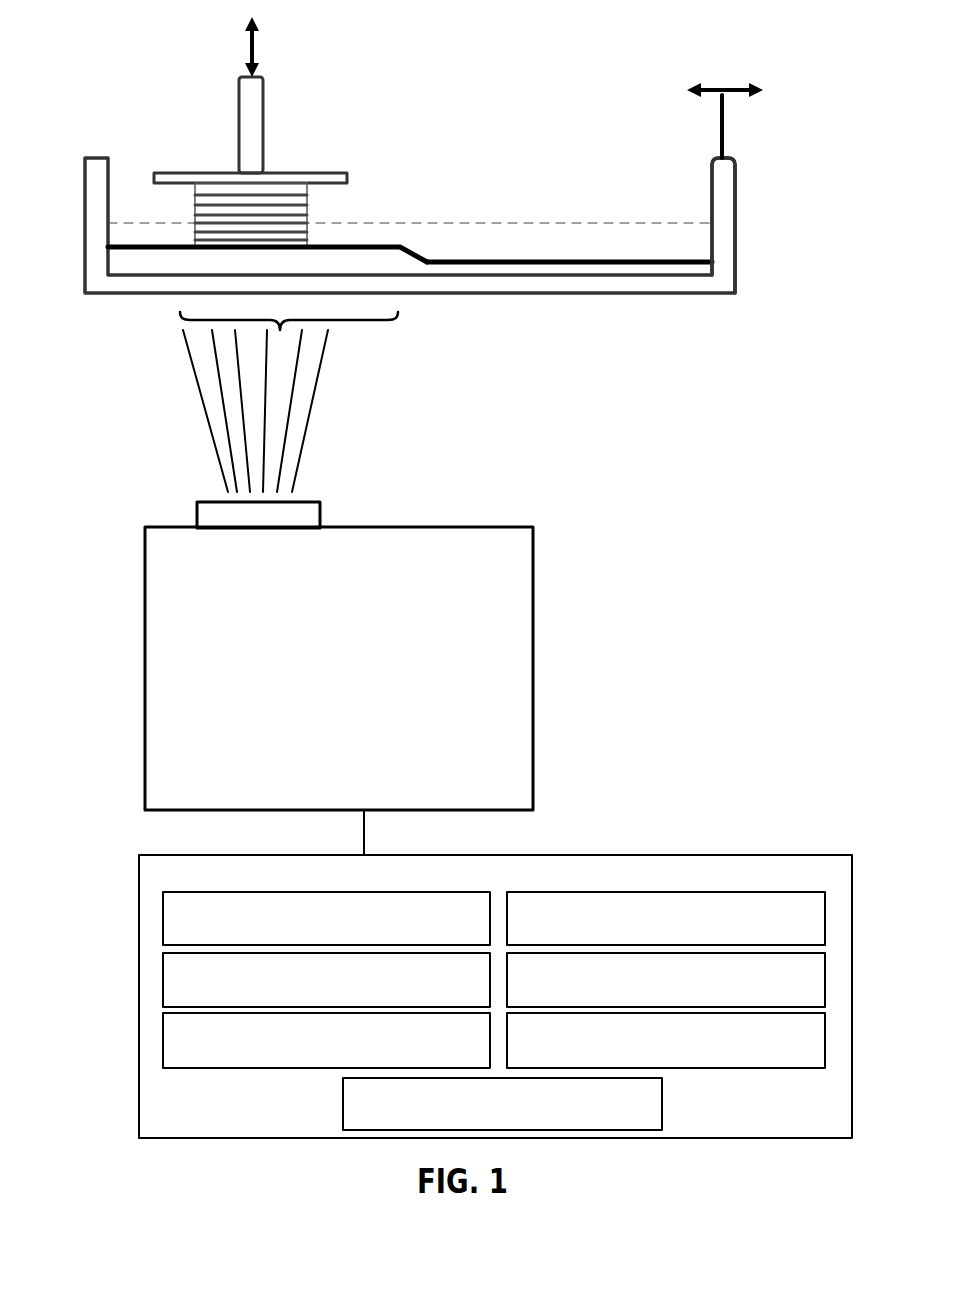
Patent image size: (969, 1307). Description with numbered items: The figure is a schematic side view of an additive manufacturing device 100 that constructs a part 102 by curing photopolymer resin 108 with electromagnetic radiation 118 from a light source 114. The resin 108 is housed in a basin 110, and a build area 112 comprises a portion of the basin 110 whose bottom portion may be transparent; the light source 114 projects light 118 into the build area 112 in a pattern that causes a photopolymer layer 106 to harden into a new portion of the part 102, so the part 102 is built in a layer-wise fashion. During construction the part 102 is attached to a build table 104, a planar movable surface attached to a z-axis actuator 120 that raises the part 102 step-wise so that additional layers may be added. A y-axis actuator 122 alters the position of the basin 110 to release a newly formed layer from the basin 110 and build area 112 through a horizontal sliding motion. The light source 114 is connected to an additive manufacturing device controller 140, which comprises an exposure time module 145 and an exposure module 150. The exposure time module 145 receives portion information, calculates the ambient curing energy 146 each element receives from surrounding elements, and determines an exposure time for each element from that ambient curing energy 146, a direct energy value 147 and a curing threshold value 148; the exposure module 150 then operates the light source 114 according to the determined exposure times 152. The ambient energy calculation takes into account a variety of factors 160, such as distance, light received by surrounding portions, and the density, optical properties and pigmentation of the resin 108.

The additive manufacturing device 100 is at (712, 540).
The part 102 is at (208, 257).
The build table 104 is at (363, 183).
The photopolymer layer 106 is at (338, 258).
The photopolymer resin 108 is at (647, 260).
The basin 110 is at (825, 220).
The build area 112 is at (280, 331).
The light source 114 is at (520, 617).
The electromagnetic radiation 118 is at (360, 445).
The z-axis actuator 120 is at (287, 66).
The y-axis actuator 122 is at (827, 147).
The additive manufacturing device controller 140 is at (456, 974).
The exposure time module 145 is at (326, 918).
The ambient curing energy 146 is at (326, 980).
The direct energy value 147 is at (326, 1040).
The curing threshold value 148 is at (666, 1040).
The exposure module 150 is at (666, 918).
The exposure times 152 is at (666, 980).
The factors 160 is at (502, 1104).